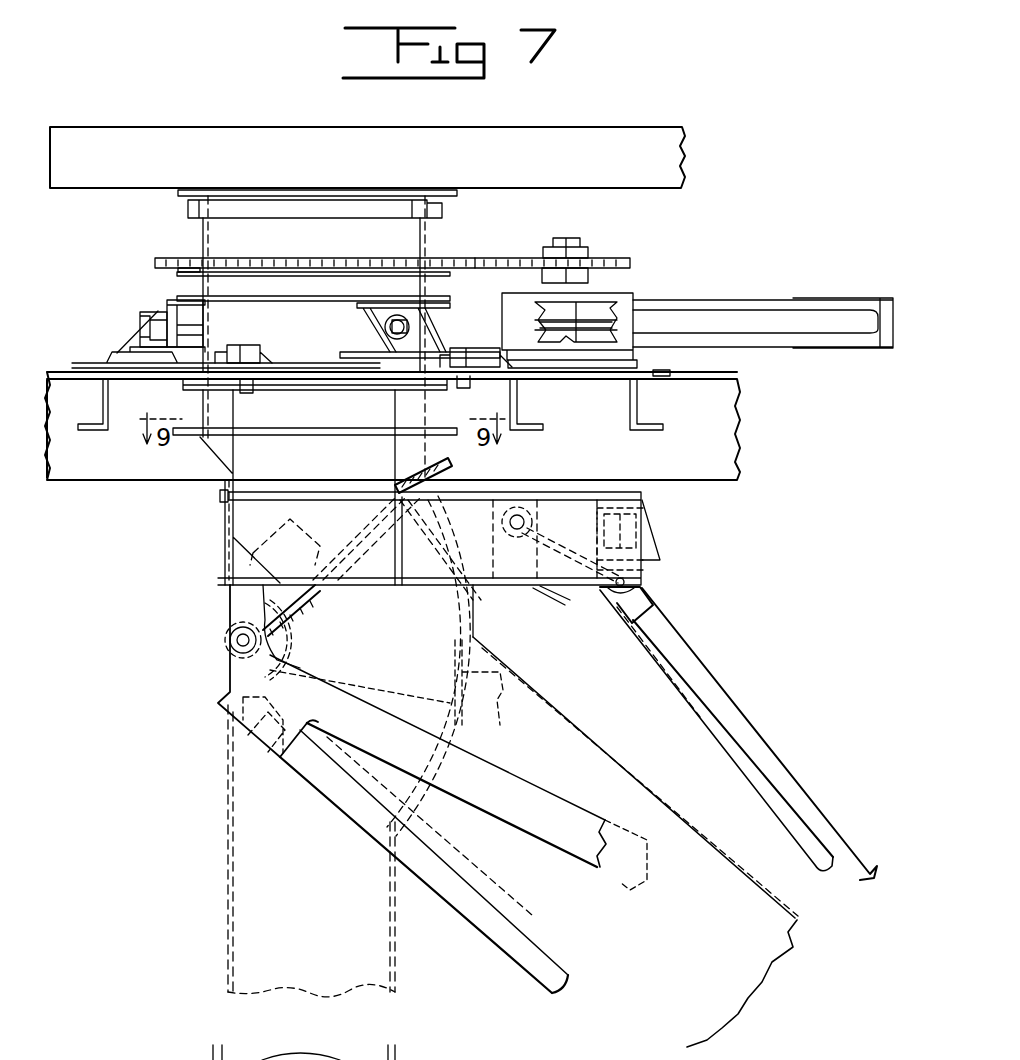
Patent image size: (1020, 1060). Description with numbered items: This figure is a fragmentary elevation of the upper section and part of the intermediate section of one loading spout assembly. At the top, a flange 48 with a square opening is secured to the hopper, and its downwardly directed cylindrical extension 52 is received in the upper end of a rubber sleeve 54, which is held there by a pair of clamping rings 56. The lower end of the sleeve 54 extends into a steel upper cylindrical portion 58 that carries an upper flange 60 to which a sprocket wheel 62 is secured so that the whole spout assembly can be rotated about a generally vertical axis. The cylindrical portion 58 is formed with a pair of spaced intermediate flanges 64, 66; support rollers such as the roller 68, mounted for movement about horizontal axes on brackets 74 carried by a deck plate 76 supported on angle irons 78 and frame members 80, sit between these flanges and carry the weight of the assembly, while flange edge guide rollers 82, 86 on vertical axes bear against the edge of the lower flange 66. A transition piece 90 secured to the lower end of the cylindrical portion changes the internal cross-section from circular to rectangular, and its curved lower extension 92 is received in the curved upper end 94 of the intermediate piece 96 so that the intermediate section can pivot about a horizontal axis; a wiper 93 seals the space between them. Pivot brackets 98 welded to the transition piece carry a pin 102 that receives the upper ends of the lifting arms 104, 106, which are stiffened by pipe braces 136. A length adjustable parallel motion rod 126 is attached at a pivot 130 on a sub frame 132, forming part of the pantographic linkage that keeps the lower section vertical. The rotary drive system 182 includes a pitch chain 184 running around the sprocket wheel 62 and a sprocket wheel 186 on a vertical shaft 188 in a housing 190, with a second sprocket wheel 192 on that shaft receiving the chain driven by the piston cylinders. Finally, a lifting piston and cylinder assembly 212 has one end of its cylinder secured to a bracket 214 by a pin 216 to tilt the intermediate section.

The flange 48 is at (452, 190).
The cylindrical extension 52 is at (216, 210).
The rubber sleeve 54 is at (425, 250).
The clamping rings 56 is at (373, 205).
The upper cylindrical portion 58 is at (442, 300).
The upper flange 60 is at (312, 276).
The sprocket wheel 62 is at (303, 254).
The intermediate flange 64 is at (186, 292).
The intermediate flange 66 is at (210, 352).
The support roller 68 is at (186, 302).
The brackets 74 is at (122, 350).
The deck plate 76 is at (668, 374).
The angle irons 78 is at (100, 432).
The frame members 80 is at (740, 460).
The flange edge guide roller 82 is at (241, 350).
The flange edge guide roller 86 is at (458, 348).
The transition piece 90 is at (430, 447).
The curved lower extension 92 is at (455, 485).
The wiper 93 is at (498, 708).
The curved upper end 94 is at (480, 618).
The intermediate piece 96 is at (228, 948).
The pivot brackets 98 is at (238, 602).
The pin 102 is at (240, 640).
The arm 104 is at (522, 794).
The arm 106 is at (645, 890).
The parallel motion rod 126 is at (745, 746).
The pivot 130 is at (518, 514).
The sub frame 132 is at (533, 592).
The pipe brace 136 is at (517, 958).
The rotary drive system 182 is at (670, 283).
The pitch chain 184 is at (495, 262).
The sprocket wheel 186 is at (626, 268).
The shaft 188 is at (576, 246).
The housing 190 is at (640, 302).
The second sprocket wheel 192 is at (598, 330).
The lifting piston and cylinder assembly 212 is at (693, 660).
The bracket 214 is at (660, 553).
The pin 216 is at (626, 582).